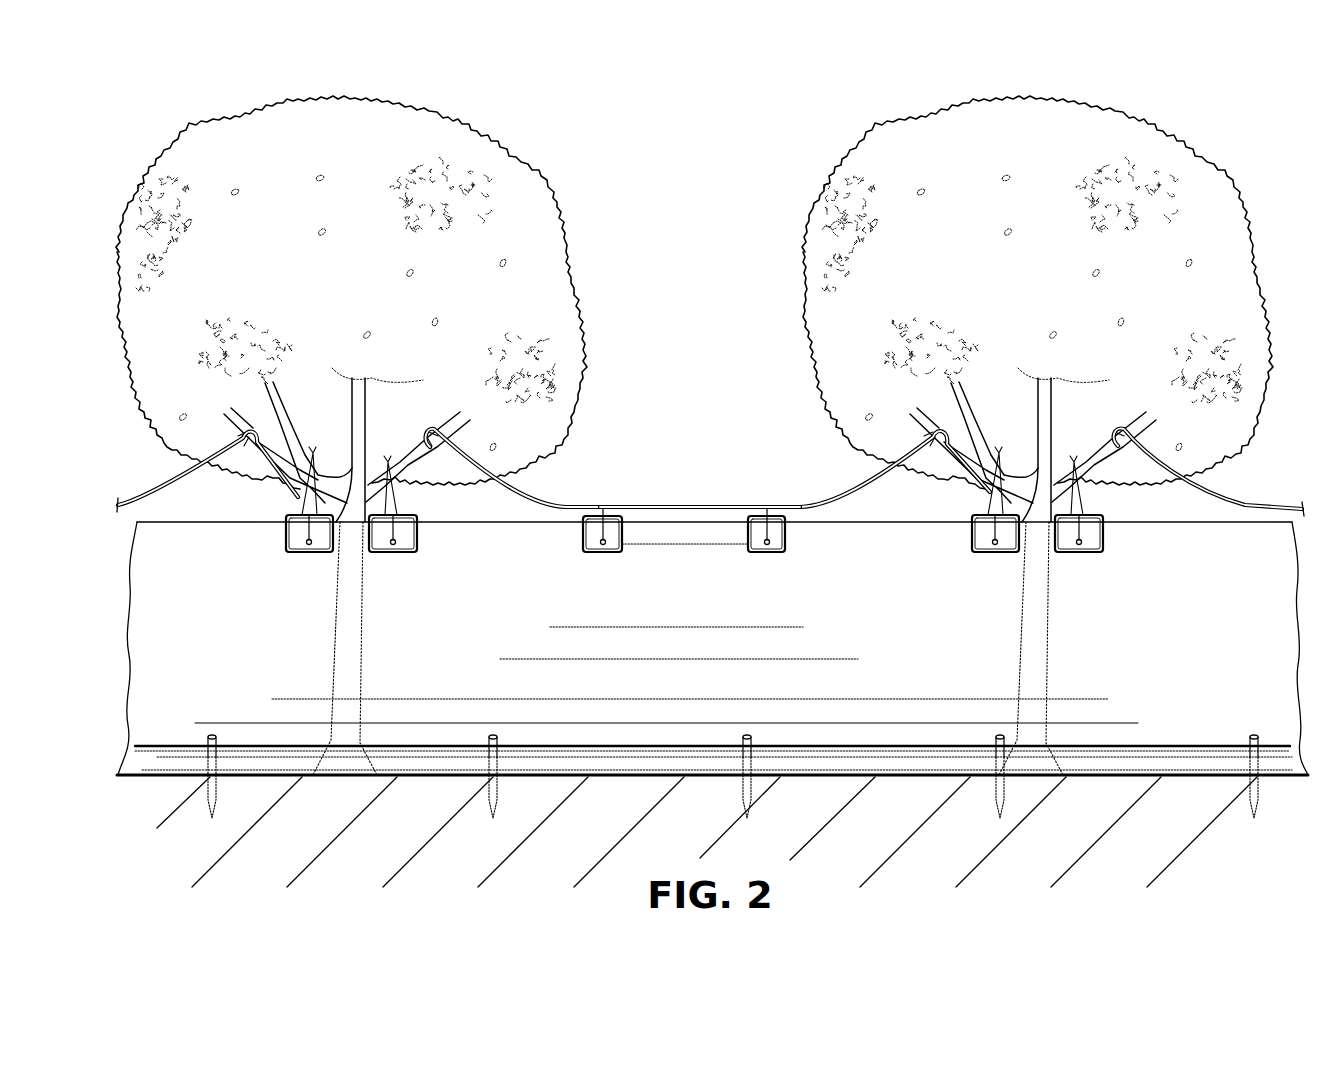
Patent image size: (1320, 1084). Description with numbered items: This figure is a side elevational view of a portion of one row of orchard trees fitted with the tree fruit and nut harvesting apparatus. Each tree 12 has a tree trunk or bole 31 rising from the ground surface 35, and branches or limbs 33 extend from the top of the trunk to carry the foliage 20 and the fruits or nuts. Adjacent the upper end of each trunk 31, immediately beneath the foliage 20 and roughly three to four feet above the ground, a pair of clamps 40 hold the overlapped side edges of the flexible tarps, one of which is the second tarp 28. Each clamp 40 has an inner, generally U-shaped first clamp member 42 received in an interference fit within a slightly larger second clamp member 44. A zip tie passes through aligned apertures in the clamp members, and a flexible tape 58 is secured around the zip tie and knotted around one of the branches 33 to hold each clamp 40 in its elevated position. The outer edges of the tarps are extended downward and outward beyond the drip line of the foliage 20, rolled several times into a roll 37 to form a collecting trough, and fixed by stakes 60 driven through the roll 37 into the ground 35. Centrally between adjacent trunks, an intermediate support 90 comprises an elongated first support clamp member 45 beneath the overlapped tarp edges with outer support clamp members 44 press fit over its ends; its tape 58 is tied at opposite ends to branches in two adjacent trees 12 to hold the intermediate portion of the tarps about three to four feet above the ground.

The tree 12 is at (694, 309).
The foliage 20 is at (547, 178).
The second tarp 28 is at (1206, 663).
The tree trunk or bole 31 is at (333, 667).
The branches or limbs 33 is at (353, 435).
The ground surface 35 is at (458, 779).
The roll 37 is at (558, 762).
The clamp 40 is at (291, 556).
The first clamp member 42 is at (600, 556).
The second clamp member 44 is at (316, 556).
The first support clamp member 45 is at (687, 547).
The tape 58 is at (150, 497).
The stakes 60 is at (493, 734).
The intermediate support 90 is at (714, 488).